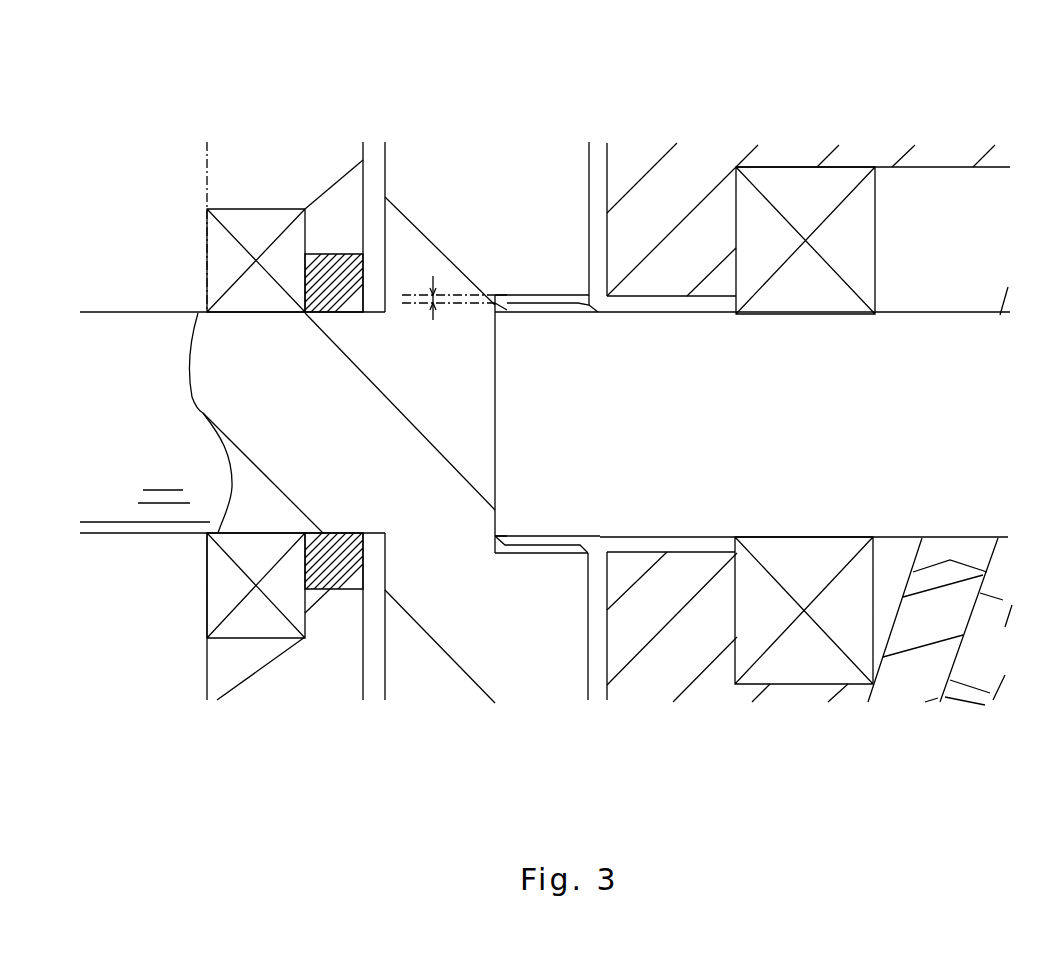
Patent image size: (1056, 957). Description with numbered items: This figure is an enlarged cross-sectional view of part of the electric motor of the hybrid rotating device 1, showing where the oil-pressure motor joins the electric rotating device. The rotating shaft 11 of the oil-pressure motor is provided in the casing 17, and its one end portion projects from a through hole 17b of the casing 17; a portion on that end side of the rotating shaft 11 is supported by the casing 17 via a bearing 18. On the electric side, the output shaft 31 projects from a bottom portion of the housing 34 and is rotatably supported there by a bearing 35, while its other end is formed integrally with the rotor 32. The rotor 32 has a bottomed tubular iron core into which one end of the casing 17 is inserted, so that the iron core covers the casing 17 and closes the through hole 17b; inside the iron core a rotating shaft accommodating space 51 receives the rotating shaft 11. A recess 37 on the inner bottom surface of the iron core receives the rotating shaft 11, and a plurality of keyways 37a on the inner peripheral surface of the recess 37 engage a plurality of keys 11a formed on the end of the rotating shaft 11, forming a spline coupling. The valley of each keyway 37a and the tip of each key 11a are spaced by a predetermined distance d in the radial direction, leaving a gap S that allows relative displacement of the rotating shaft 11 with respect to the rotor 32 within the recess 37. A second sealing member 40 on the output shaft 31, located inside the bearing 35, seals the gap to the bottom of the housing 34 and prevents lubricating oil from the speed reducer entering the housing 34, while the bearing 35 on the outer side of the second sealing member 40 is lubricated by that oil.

The electric compressor / device 1 is at (970, 135).
The rotating shaft 11 is at (695, 523).
The keys 11a is at (513, 310).
The casing 17 is at (633, 683).
The through hole 17b is at (608, 553).
The bearing 18 is at (802, 190).
The output shaft 31 is at (124, 537).
The rotor 32 is at (524, 690).
The housing 34 is at (222, 180).
The bearing 35 is at (260, 228).
The recess 37 is at (510, 553).
The keyways 37a is at (523, 297).
The second sealing member 40 is at (338, 268).
The rotating shaft accommodating space 51 is at (598, 312).
The gap S is at (577, 297).
The predetermined distance d is at (427, 297).